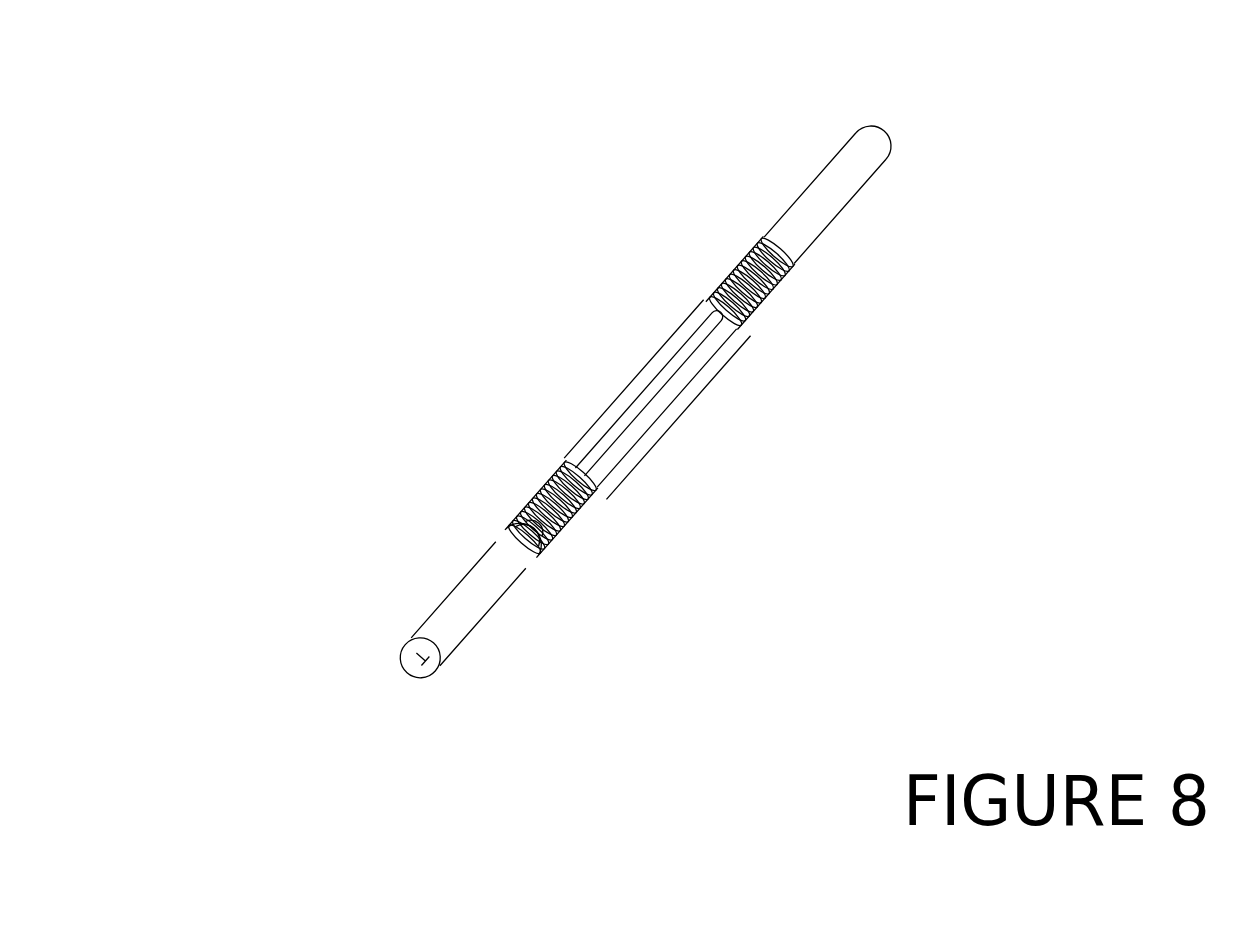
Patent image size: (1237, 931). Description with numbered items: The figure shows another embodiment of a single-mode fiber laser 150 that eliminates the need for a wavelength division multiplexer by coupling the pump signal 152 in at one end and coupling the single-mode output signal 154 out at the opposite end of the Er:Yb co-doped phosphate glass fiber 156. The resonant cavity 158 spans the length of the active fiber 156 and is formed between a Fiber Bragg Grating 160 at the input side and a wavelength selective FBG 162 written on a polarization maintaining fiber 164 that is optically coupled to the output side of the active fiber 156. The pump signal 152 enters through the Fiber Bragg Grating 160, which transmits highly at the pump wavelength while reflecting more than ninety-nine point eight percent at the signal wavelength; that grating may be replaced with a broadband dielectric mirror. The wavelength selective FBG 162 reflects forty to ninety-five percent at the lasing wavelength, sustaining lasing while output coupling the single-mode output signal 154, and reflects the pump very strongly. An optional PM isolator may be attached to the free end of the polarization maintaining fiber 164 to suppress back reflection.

The single-mode fiber laser 150 is at (484, 244).
The pump signal 152 is at (890, 128).
The single-mode output signal 154 is at (413, 667).
The Er:Yb co-doped phosphate glass fiber 156 is at (653, 407).
The resonant cavity 158 is at (685, 285).
The Fiber Bragg Grating 160 is at (763, 297).
The wavelength selective FBG 162 is at (553, 533).
The polarization maintaining fiber 164 is at (477, 592).